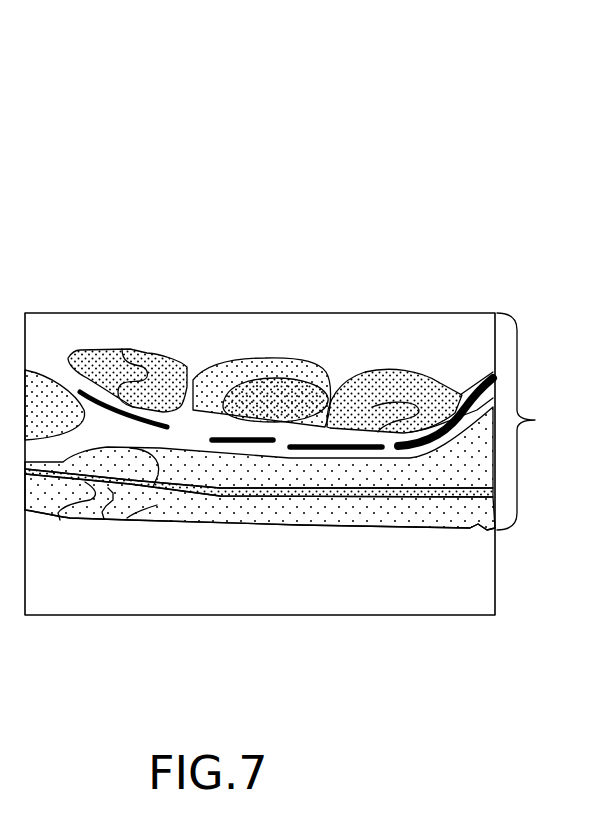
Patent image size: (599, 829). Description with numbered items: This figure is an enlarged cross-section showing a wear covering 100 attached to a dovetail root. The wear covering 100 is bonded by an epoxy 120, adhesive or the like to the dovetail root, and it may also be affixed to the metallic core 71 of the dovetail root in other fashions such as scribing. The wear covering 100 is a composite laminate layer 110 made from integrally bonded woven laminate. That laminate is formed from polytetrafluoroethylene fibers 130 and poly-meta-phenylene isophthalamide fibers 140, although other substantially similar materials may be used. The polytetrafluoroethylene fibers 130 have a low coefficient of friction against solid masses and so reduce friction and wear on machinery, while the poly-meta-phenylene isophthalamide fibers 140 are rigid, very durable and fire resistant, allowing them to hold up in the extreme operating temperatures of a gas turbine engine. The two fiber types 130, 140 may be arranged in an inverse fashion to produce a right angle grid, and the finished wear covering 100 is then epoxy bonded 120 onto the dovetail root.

The metallic core 71 is at (300, 590).
The wear covering 100 is at (410, 70).
The composite laminate layer 110 is at (545, 421).
The epoxy 120 is at (147, 492).
The polytetrafluoroethylene fibers 130 is at (374, 408).
The poly-meta-phenylene isophthalamide fibers 140 is at (108, 367).